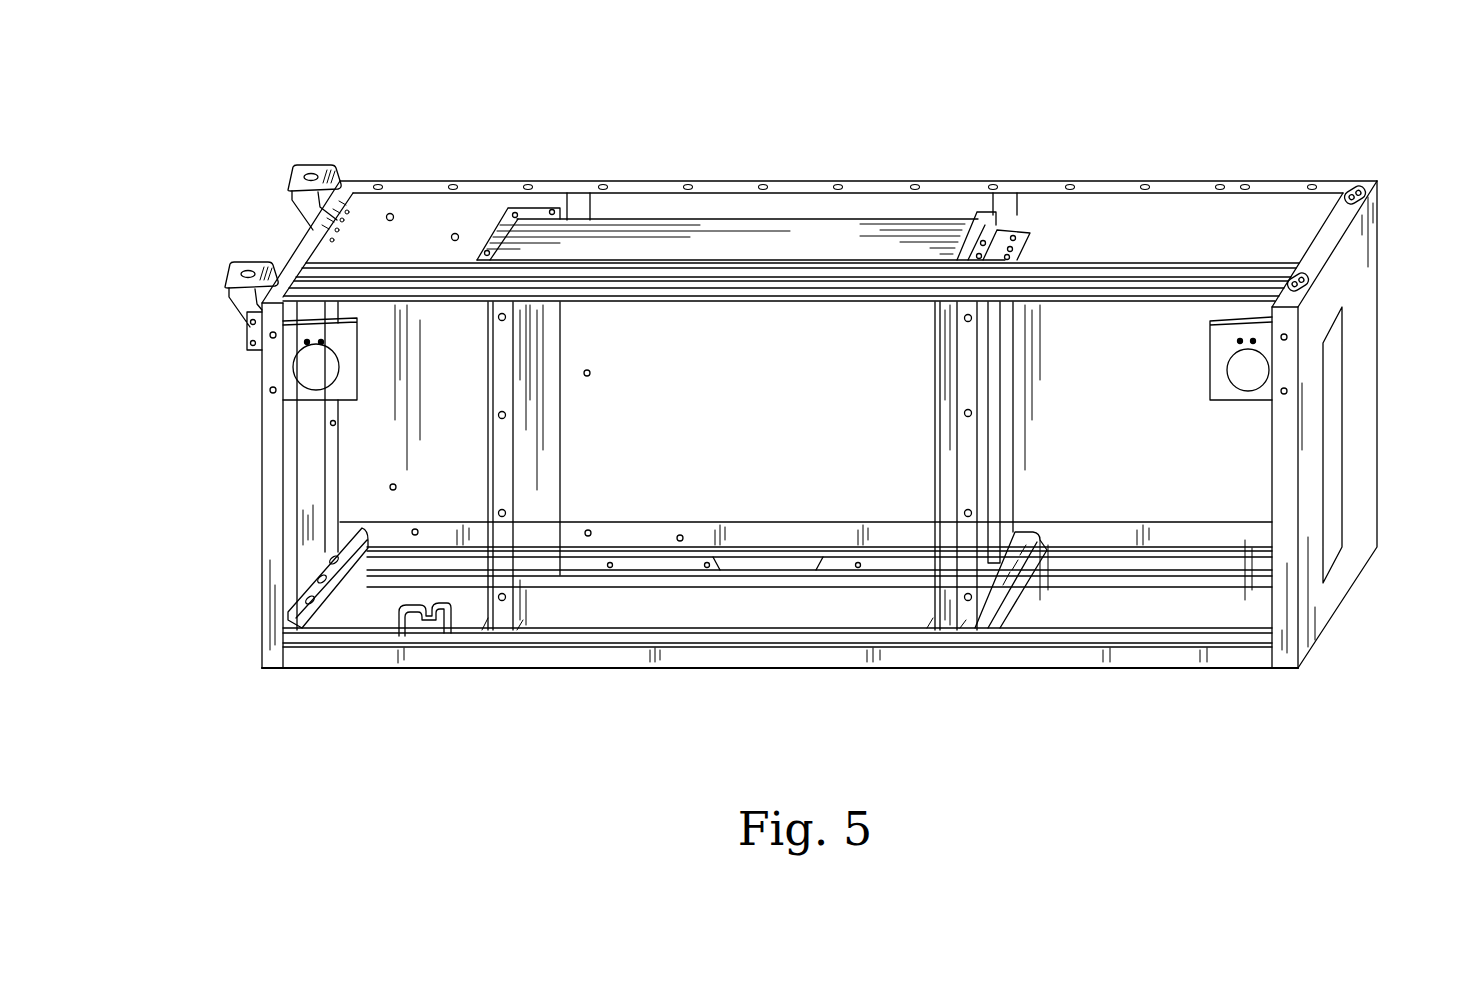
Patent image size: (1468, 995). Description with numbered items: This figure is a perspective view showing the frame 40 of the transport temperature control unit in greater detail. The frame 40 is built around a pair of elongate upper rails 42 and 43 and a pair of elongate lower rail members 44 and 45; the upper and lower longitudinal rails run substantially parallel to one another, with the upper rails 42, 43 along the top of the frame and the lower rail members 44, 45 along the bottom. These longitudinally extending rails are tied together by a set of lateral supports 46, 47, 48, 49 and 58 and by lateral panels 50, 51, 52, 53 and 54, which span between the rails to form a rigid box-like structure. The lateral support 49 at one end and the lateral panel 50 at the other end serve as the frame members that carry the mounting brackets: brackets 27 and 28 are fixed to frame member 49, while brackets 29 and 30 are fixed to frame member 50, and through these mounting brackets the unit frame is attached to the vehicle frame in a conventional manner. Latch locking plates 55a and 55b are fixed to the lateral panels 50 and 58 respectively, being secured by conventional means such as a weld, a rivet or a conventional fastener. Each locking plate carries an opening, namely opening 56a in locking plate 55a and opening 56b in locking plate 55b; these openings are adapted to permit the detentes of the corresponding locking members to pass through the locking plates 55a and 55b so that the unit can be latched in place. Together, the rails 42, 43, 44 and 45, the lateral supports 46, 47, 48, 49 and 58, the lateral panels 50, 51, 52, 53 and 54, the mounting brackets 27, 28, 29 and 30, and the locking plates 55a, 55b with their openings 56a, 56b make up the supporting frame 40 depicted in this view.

The frame 40 is at (762, 122).
The mounting bracket 27 is at (302, 167).
The mounting bracket 28 is at (235, 265).
The mounting bracket 29 is at (1355, 190).
The mounting bracket 30 is at (1298, 280).
The upper rail 42 is at (1110, 185).
The upper rail 43 is at (1168, 260).
The lower rail member 44 is at (810, 530).
The lower rail member 45 is at (822, 652).
The lateral support 46 is at (333, 593).
The lateral support 47 is at (1027, 575).
The lateral support 48 is at (546, 606).
The lateral support 49 is at (294, 247).
The lateral panel 50 is at (1368, 415).
The lateral panel 51 is at (594, 347).
The lateral panel 52 is at (308, 617).
The lateral panel 53 is at (328, 437).
The lateral panel 54 is at (940, 398).
The latch locking plate 55a is at (1223, 397).
The latch locking plate 55b is at (347, 380).
The opening 56a is at (1227, 373).
The opening 56b is at (298, 377).
The lateral support 58 is at (262, 543).